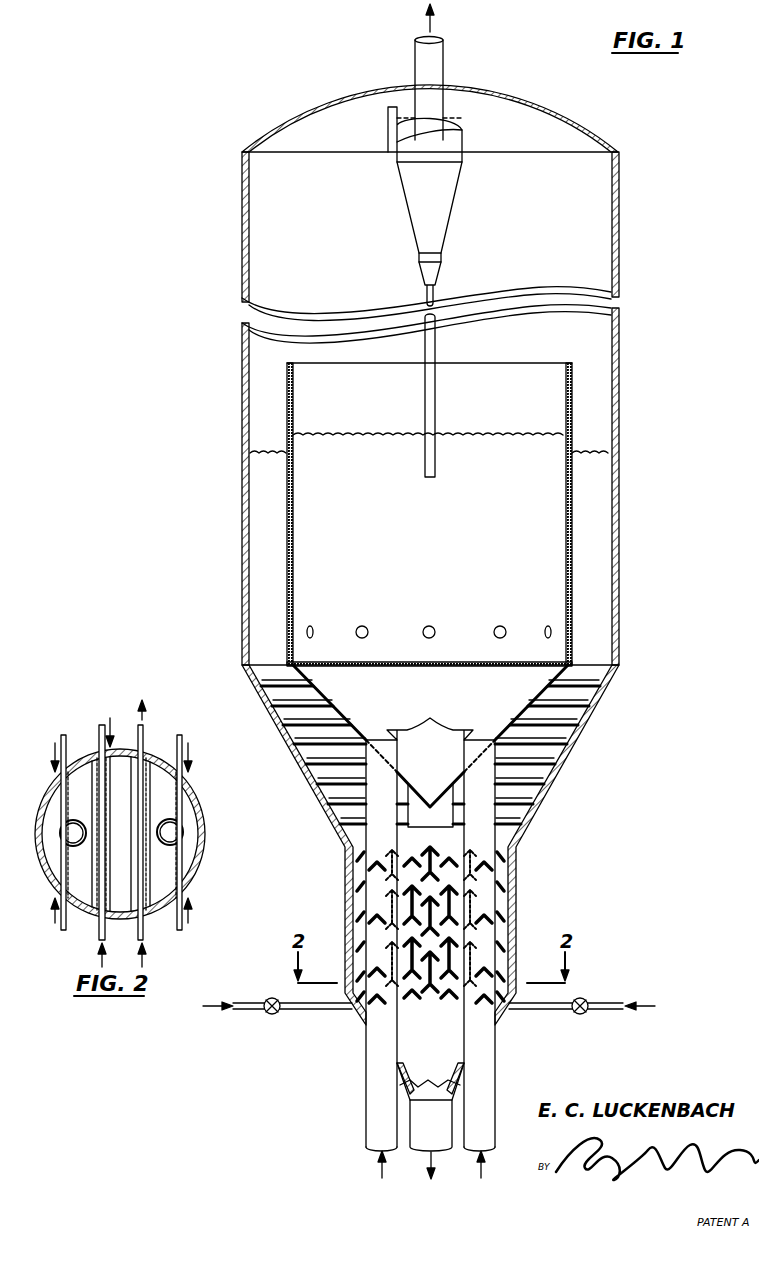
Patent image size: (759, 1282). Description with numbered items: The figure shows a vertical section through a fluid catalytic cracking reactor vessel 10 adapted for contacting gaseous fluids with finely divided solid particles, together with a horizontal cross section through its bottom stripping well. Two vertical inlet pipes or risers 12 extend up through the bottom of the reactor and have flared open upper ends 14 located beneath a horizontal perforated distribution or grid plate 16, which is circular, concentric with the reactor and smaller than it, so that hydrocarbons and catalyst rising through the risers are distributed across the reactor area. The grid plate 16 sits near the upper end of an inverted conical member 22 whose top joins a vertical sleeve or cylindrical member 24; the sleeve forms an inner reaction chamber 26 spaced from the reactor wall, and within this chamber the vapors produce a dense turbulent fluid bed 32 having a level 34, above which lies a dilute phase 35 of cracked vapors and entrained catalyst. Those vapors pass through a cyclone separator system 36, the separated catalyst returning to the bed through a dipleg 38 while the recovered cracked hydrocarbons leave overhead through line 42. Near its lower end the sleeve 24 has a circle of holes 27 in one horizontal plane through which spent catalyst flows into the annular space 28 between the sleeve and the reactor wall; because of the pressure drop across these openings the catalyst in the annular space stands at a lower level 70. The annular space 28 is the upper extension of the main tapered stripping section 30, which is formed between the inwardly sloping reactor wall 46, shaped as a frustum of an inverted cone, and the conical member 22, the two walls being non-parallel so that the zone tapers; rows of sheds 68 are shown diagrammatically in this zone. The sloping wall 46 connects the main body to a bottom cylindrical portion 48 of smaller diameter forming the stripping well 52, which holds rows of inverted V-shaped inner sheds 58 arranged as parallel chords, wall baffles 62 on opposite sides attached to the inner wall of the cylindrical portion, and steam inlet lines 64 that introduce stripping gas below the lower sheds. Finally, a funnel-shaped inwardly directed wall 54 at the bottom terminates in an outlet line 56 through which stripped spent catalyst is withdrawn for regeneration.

In FIG. 1, the reactor vessel 10 is at (620, 216).
In FIG. 1, the inlet pipes or risers 12 is at (374, 1096).
In FIG. 2, the inlet pipes or risers 12 is at (61, 830).
In FIG. 1, the flared open upper ends 14 is at (455, 731).
In FIG. 1, the perforated distribution or grid plate 16 is at (457, 660).
In FIG. 1, the inverted conical member 22 is at (522, 709).
In FIG. 1, the sleeve or cylindrical member 24 is at (572, 487).
In FIG. 1, the inner reaction chamber 26 is at (553, 531).
In FIG. 1, the holes 27 is at (425, 627).
In FIG. 1, the annular space 28 is at (600, 565).
In FIG. 1, the tapered stripping section 30 is at (562, 734).
In FIG. 1, the dense turbulent fluid bed 32 is at (355, 450).
In FIG. 1, the level 34 is at (493, 432).
In FIG. 1, the dilute phase 35 is at (349, 237).
In FIG. 1, the cyclone separator system 36 is at (446, 203).
In FIG. 1, the cyclone separator dipleg 38 is at (437, 341).
In FIG. 1, the line 42 is at (440, 62).
In FIG. 1, the inwardly extending wall 46 is at (563, 757).
In FIG. 1, the bottom cylindrical portion 48 is at (517, 888).
In FIG. 2, the bottom cylindrical portion 48 is at (195, 880).
In FIG. 1, the bottom stripping section or stripping well 52 is at (505, 912).
In FIG. 2, the bottom stripping section or stripping well 52 is at (122, 905).
In FIG. 1, the inwardly directed wall 54 is at (403, 1079).
In FIG. 1, the outlet line 56 is at (420, 1137).
In FIG. 1, the inner sheds 58 is at (499, 866).
In FIG. 2, the inner sheds 58 is at (117, 760).
In FIG. 1, the wall or side sheds or baffles 62 is at (364, 936).
In FIG. 1, the steam inlet lines 64 is at (243, 1002).
In FIG. 2, the steam inlet lines 64 is at (63, 748).
In FIG. 1, the sheds 68 is at (247, 676).
In FIG. 1, the level 70 is at (583, 450).